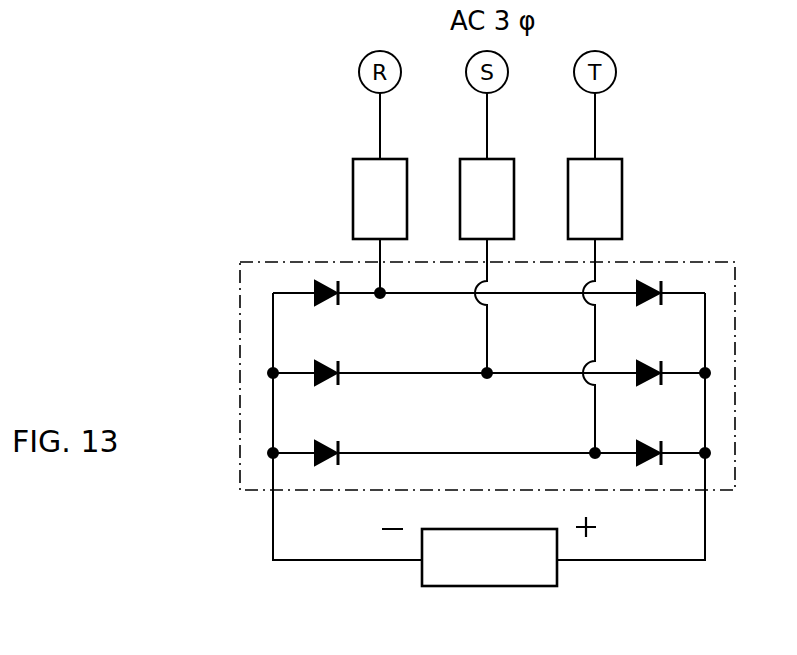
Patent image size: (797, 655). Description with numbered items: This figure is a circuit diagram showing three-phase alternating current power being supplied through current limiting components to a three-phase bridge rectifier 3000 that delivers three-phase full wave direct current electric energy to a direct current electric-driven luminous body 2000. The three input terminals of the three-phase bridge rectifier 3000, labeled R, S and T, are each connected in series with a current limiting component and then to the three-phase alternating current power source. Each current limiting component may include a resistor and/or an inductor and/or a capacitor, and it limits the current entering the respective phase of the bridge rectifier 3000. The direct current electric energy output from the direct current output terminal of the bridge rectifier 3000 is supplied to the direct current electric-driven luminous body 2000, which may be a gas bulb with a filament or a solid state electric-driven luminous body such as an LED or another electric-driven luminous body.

The three-phase bridge rectifier 3000 is at (240, 360).
The direct current electric-driven luminous body 2000 is at (458, 587).